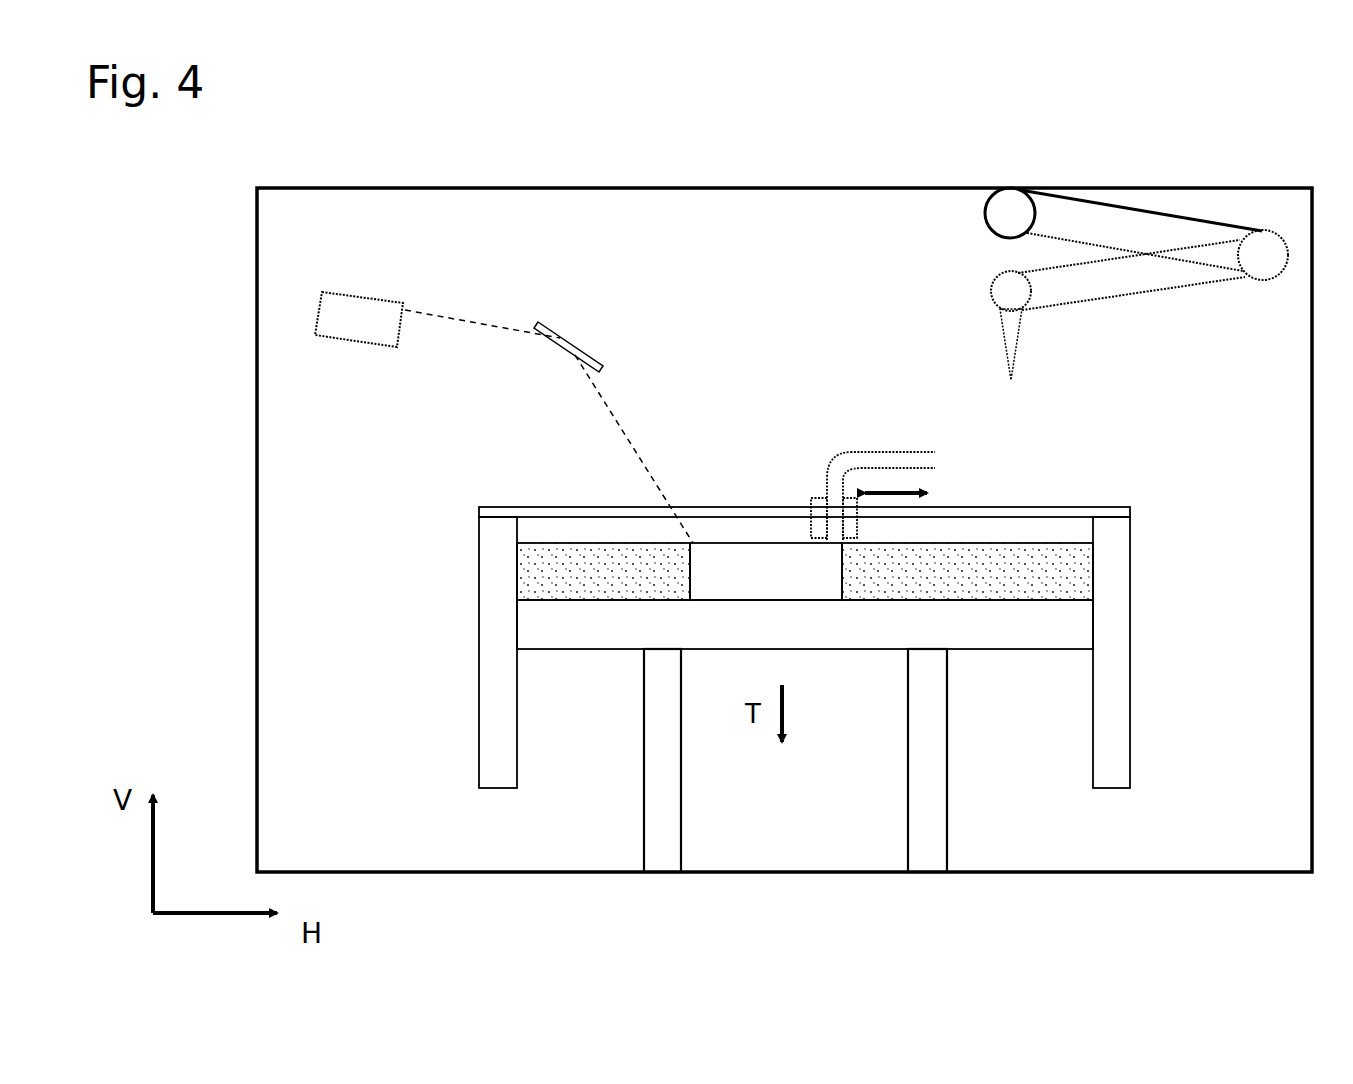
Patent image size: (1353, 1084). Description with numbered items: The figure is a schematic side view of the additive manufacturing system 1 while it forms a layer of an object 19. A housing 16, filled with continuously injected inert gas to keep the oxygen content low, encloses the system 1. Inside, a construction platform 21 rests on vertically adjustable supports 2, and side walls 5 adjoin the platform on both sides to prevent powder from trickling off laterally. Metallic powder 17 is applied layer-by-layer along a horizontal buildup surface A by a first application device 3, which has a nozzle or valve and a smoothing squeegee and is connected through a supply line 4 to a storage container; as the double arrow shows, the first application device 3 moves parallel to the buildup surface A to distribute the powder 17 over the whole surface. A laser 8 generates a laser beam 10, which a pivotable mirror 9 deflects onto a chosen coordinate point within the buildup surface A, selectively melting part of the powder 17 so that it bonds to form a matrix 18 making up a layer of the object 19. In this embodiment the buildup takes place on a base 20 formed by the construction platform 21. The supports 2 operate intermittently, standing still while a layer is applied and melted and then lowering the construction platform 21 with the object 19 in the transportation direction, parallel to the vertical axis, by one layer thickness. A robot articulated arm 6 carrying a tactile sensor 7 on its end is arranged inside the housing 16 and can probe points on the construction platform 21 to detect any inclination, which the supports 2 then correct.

The additive manufacturing system 1 is at (522, 149).
The vertically adjustable supports 2 is at (669, 766).
The first application device 3 is at (796, 499).
The supply line 4 is at (862, 452).
The side walls 5 is at (480, 640).
The robot articulated arm 6 is at (1146, 315).
The tactile sensor 7 is at (1000, 333).
The laser 8 is at (369, 335).
The pivotable mirror 9 is at (575, 330).
The laser beam 10 is at (620, 420).
The housing 16 is at (806, 188).
The metallic powder 17 is at (605, 592).
The matrix 18 is at (766, 571).
The object 19 is at (806, 589).
The base 20 is at (805, 624).
The construction platform 21 is at (847, 643).
The buildup surface A is at (600, 536).